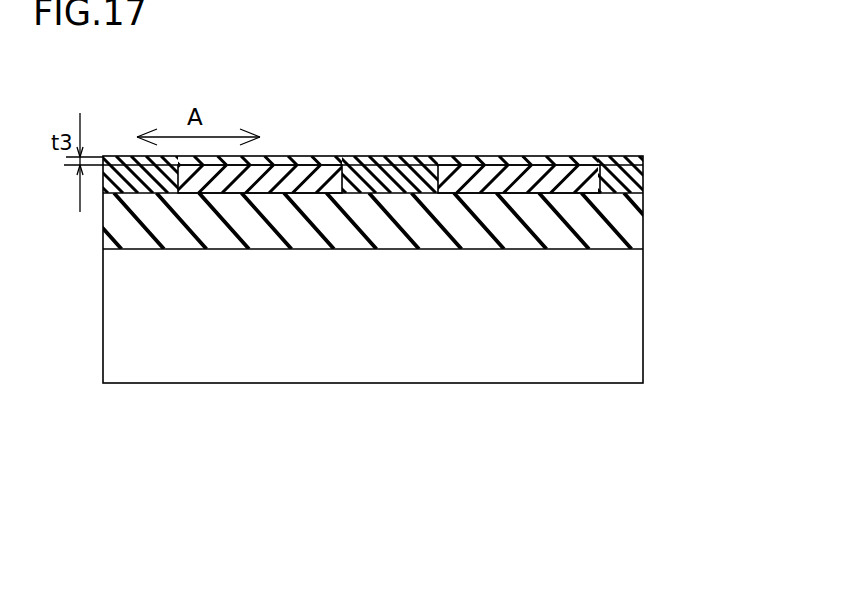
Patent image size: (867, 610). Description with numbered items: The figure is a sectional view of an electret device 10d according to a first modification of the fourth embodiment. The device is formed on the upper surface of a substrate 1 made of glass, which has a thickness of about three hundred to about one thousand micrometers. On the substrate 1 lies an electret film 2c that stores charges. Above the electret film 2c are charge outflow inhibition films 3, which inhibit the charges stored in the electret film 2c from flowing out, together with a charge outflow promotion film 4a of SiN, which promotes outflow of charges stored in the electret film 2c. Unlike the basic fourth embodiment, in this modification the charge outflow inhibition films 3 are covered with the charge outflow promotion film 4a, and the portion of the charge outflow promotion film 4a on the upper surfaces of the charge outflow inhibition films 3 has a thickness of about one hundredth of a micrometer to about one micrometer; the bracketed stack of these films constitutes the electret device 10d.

The substrate 1 is at (623, 309).
The electret film 2c is at (623, 222).
The charge outflow inhibition film 3 is at (323, 173).
The charge outflow promotion film 4a is at (618, 178).
The electret device 10d is at (732, 125).